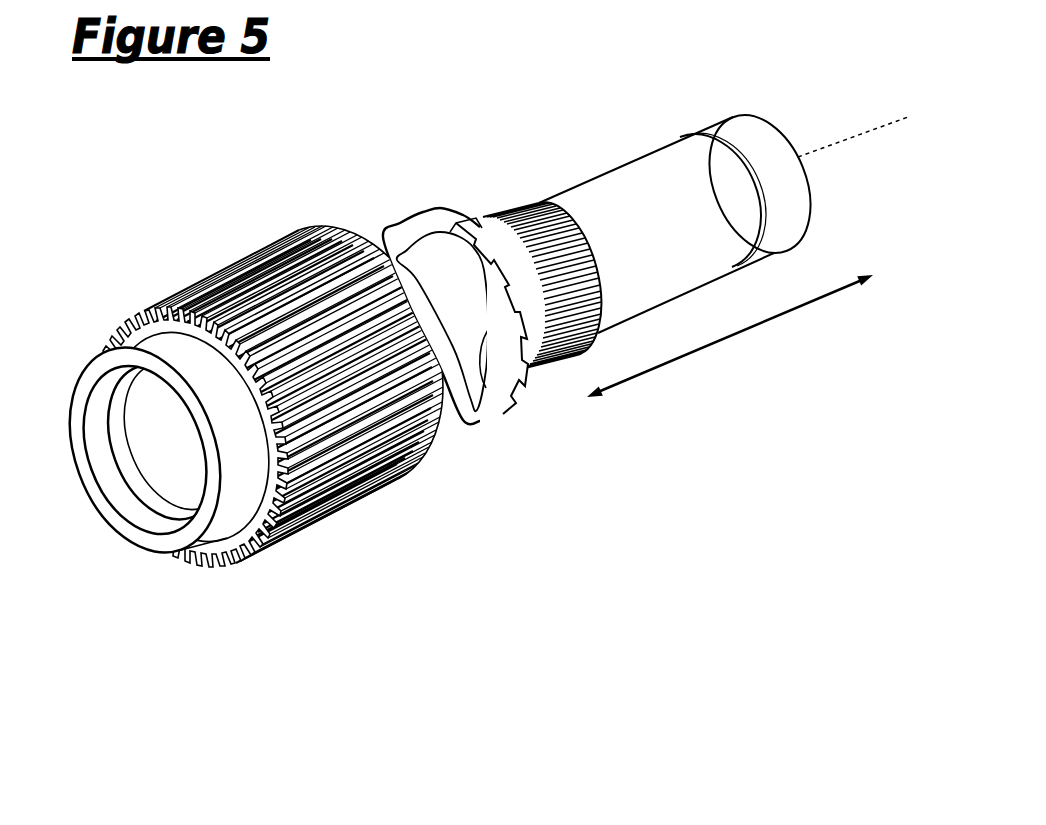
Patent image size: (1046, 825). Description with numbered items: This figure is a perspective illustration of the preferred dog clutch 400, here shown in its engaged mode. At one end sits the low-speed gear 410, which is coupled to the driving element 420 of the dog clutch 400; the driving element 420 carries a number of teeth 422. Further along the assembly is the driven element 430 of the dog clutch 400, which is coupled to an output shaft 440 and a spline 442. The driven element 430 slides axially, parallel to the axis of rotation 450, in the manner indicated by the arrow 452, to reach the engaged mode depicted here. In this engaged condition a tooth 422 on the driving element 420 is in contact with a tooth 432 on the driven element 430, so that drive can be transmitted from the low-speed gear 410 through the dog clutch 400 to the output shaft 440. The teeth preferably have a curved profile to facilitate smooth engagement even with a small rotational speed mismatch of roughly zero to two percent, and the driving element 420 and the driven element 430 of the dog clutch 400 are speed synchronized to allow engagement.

The dog clutch 400 is at (180, 188).
The low-speed gear 410 is at (267, 563).
The driving element 420 is at (395, 232).
The teeth 422 is at (483, 250).
The driven element 430 is at (457, 213).
The teeth 432 is at (472, 227).
The output shaft 440 is at (573, 305).
The spline 442 is at (566, 362).
The axis of rotation 450 is at (835, 142).
The arrow 452 is at (727, 337).